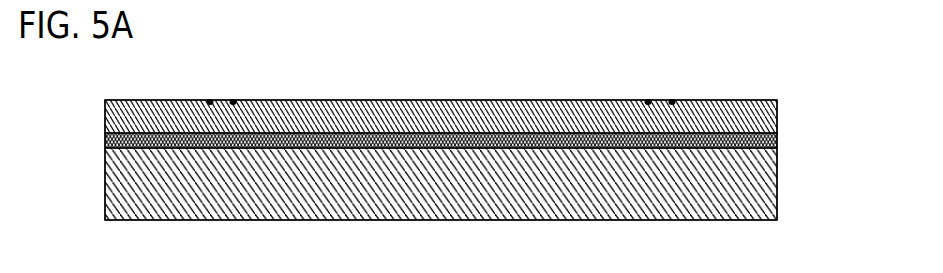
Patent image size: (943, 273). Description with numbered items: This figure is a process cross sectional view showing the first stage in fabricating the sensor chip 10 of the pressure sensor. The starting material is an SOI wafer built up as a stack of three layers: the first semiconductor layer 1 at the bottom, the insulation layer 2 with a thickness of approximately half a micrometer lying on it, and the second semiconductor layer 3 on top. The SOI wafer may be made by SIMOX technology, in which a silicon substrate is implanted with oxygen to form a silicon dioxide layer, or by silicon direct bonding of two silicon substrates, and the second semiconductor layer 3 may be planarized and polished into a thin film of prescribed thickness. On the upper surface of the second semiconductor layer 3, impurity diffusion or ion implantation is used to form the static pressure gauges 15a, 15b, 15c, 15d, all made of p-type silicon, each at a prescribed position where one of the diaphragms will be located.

The first semiconductor layer 1 is at (779, 192).
The insulation layer 2 is at (779, 147).
The second semiconductor layer 3 is at (779, 123).
The sensor chip 10 is at (828, 103).
The static pressure gauge 15a is at (210, 100).
The static pressure gauge 15b is at (672, 100).
The static pressure gauge 15c is at (233, 100).
The static pressure gauge 15d is at (648, 100).